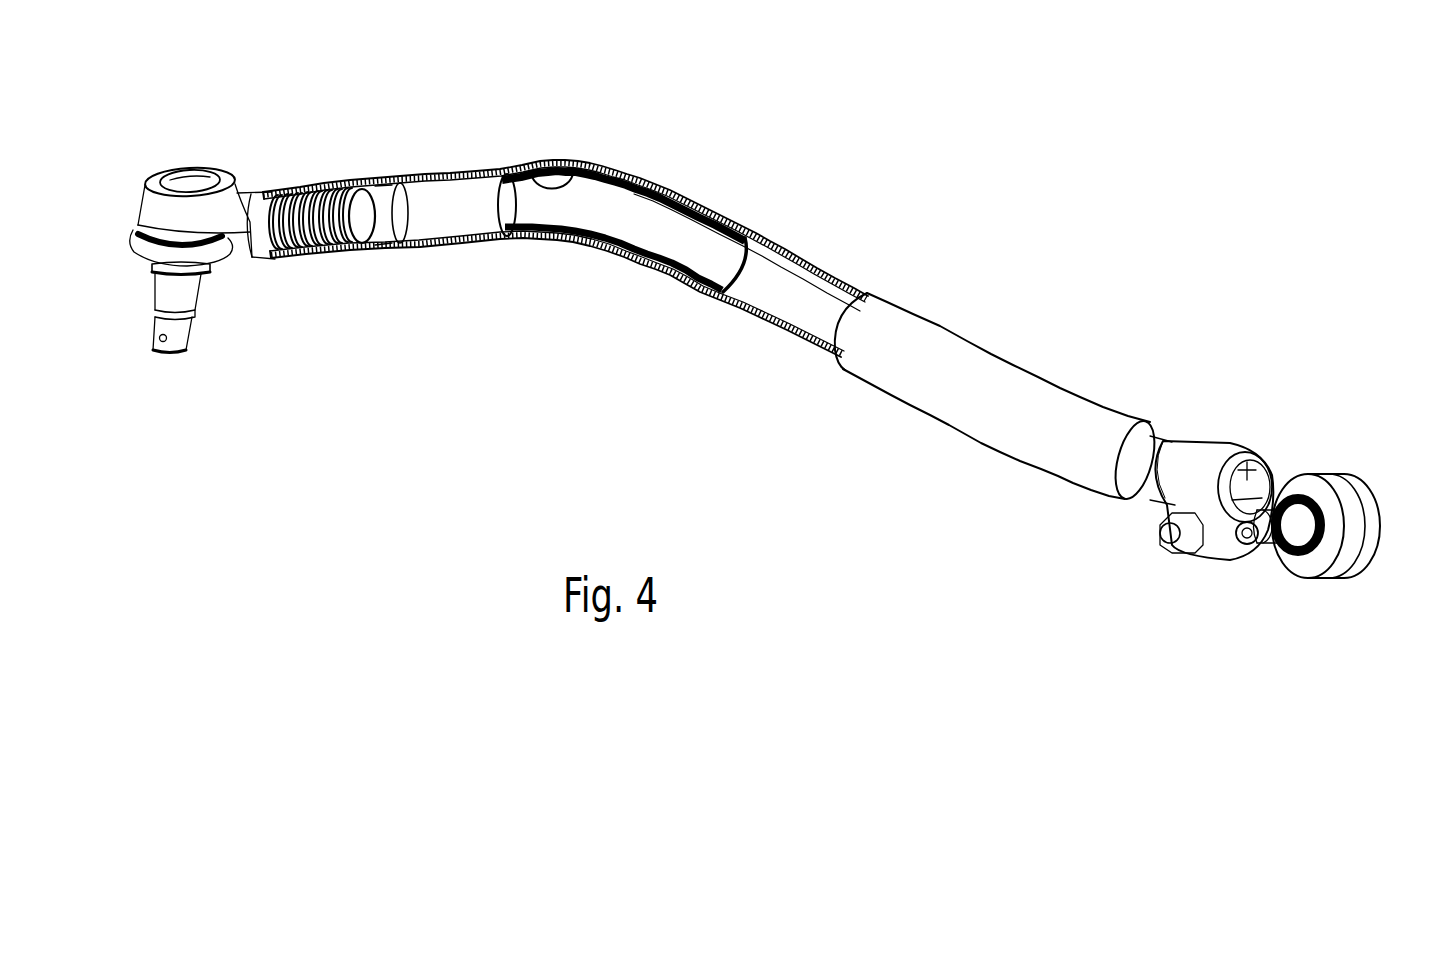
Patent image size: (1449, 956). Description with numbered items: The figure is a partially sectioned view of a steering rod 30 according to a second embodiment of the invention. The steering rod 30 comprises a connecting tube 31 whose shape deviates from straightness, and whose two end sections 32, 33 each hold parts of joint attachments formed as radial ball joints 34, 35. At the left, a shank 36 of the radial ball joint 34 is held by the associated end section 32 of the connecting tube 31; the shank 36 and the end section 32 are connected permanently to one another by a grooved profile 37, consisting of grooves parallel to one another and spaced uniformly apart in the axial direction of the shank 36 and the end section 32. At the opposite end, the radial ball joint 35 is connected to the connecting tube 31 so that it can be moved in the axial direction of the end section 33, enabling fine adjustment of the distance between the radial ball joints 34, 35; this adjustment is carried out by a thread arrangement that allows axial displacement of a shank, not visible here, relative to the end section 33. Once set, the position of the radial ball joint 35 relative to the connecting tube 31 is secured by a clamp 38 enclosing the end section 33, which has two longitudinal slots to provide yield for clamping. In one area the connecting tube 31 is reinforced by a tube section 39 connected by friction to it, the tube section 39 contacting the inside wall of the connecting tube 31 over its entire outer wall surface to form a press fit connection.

The steering rod 30 is at (922, 168).
The connecting tube 31 is at (753, 320).
The end section 32 is at (323, 260).
The end section 33 is at (1157, 480).
The radial ball joint 34 is at (183, 163).
The radial ball joint 35 is at (1360, 477).
The shank 36 is at (300, 213).
The grooved profile 37 is at (340, 185).
The clamp 38 is at (1203, 470).
The tube section 39 is at (573, 172).